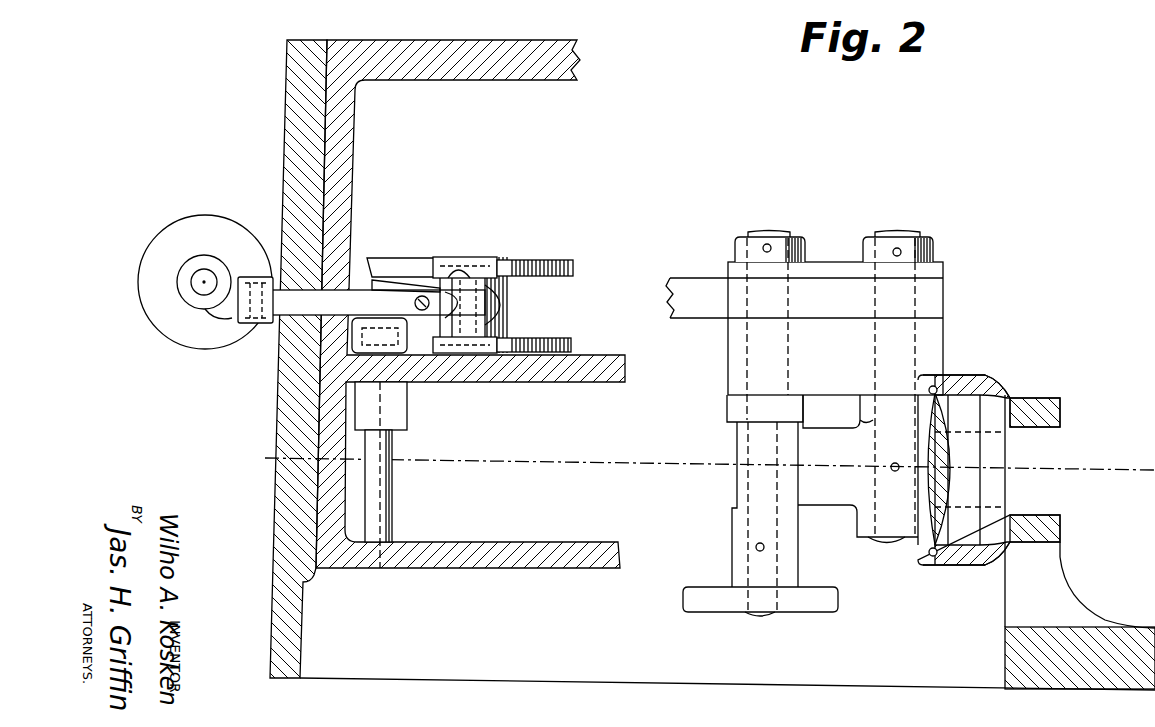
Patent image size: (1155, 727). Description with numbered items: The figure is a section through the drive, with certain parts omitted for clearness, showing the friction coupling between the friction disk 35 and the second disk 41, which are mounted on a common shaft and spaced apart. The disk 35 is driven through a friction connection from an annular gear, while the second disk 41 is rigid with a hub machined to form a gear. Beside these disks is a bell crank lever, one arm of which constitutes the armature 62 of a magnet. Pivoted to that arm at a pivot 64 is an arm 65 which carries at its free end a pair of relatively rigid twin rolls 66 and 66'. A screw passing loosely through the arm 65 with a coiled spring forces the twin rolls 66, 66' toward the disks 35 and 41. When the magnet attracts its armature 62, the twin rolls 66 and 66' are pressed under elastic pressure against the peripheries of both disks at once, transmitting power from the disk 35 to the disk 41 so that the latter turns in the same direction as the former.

The armature 62 is at (186, 301).
The pivot 64 is at (258, 281).
The arm 65 is at (336, 297).
The twin roll 66 is at (487, 239).
The friction disk 35 is at (561, 261).
The second disk 41 is at (573, 346).
The twin roll 66' is at (481, 375).